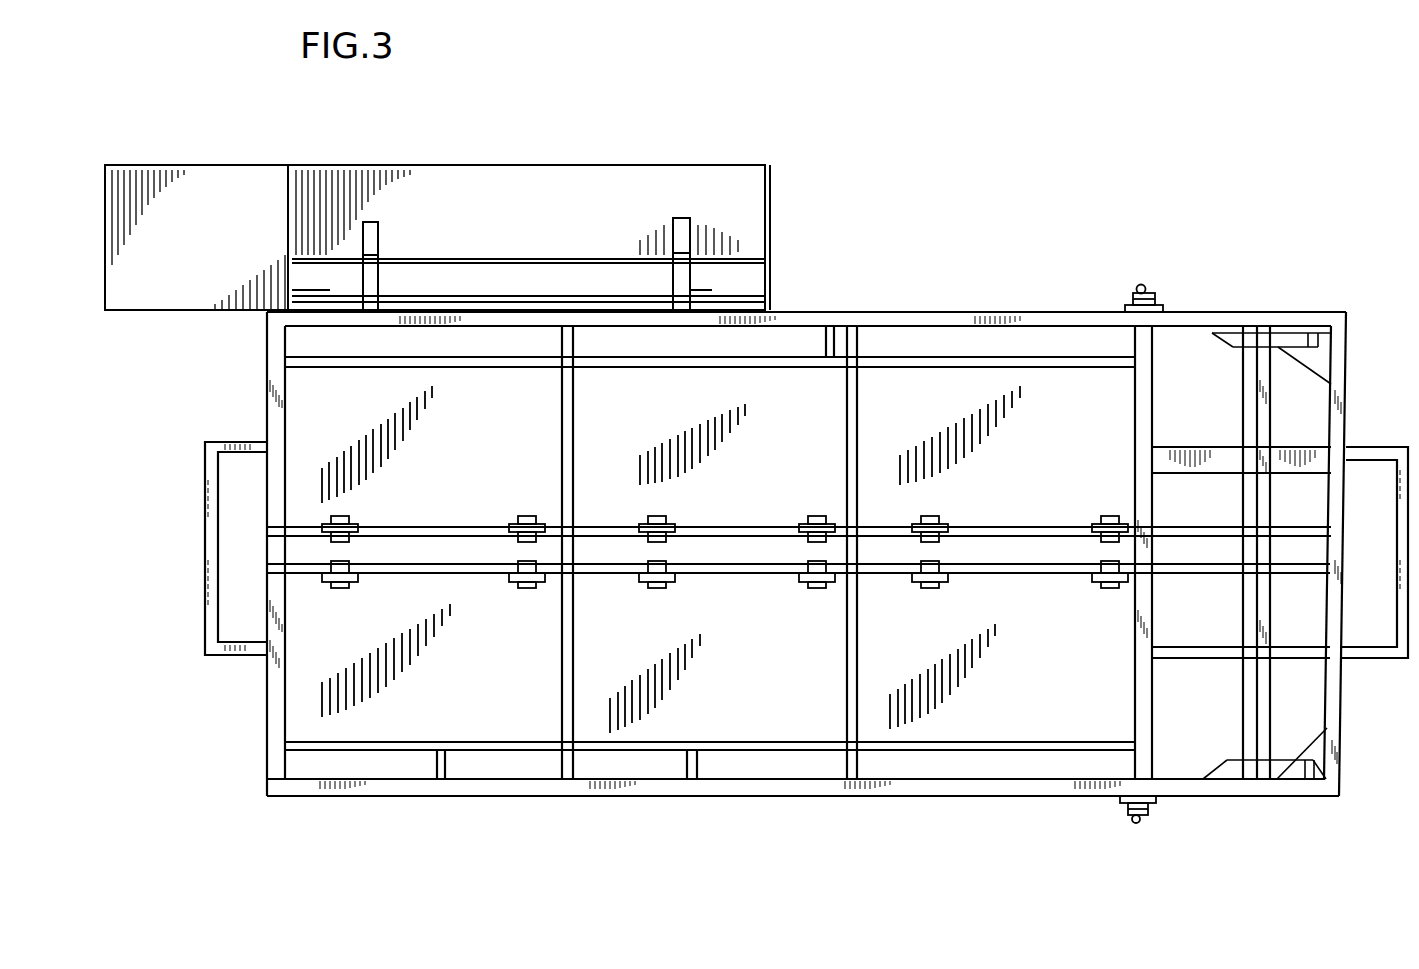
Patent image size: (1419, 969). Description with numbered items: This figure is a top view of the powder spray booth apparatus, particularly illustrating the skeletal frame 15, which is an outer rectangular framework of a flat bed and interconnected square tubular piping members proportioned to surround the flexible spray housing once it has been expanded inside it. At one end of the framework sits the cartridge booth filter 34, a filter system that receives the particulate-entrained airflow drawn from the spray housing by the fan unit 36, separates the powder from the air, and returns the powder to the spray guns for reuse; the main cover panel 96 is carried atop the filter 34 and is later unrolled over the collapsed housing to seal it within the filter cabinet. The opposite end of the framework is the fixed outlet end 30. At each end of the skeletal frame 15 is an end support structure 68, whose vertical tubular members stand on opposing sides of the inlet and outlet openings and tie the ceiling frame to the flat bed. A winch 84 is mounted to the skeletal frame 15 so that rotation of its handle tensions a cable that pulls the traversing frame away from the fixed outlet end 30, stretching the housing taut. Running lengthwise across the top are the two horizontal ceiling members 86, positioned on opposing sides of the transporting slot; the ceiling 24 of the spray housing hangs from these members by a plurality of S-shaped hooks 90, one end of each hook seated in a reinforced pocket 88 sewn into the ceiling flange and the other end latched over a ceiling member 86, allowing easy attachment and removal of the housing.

The skeletal frame 15 is at (880, 306).
The ceiling 24 is at (452, 448).
The outlet end 30 is at (267, 750).
The cartridge booth filter 34 is at (344, 184).
The fan unit 36 is at (182, 183).
The end support structure 68 is at (205, 638).
The winch 84 is at (1152, 290).
The skeletal frame ceiling members 86 is at (400, 566).
The pockets 88 is at (948, 520).
The S-shaped hooks 90 is at (924, 516).
The main cover panel 96 is at (750, 282).